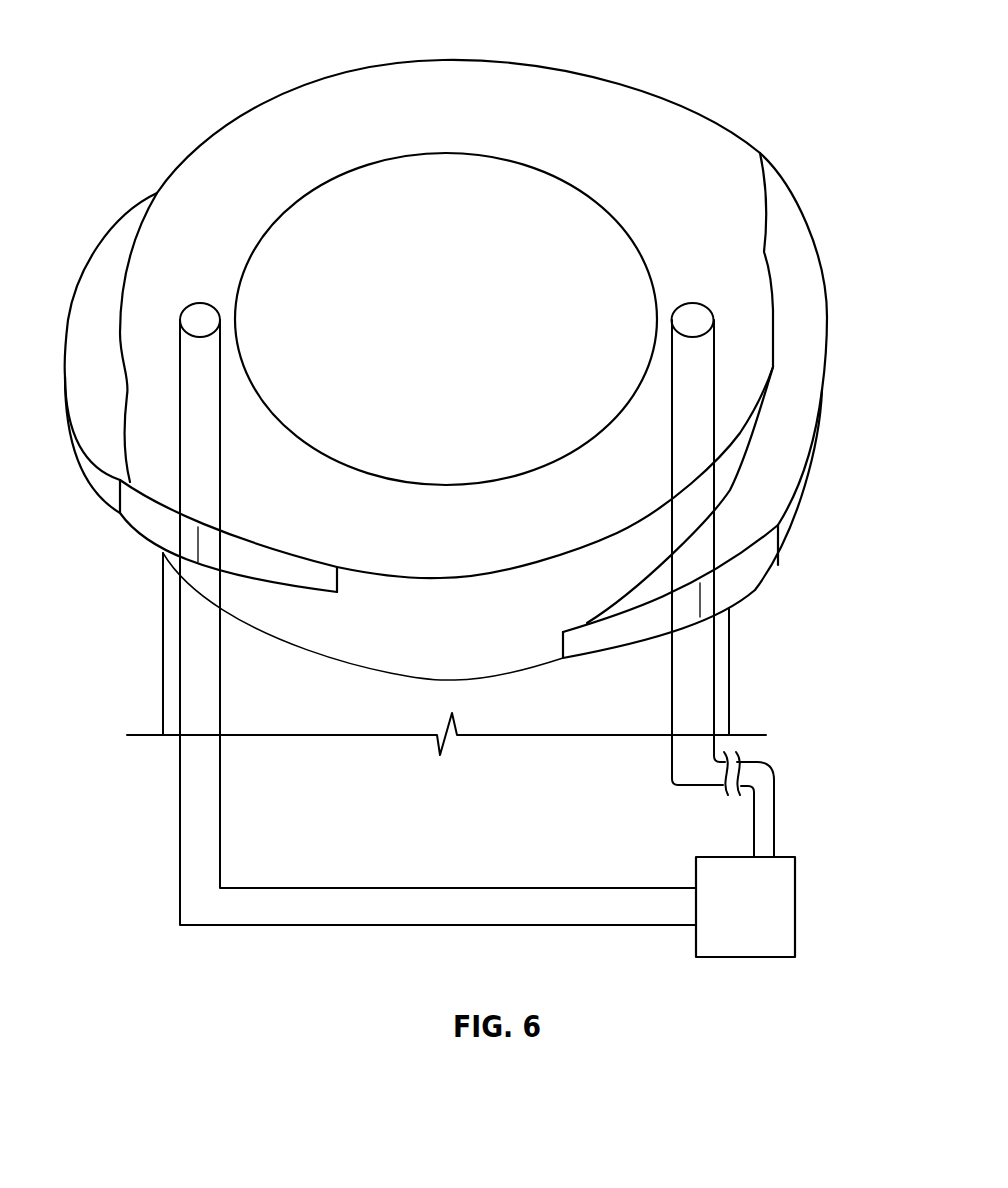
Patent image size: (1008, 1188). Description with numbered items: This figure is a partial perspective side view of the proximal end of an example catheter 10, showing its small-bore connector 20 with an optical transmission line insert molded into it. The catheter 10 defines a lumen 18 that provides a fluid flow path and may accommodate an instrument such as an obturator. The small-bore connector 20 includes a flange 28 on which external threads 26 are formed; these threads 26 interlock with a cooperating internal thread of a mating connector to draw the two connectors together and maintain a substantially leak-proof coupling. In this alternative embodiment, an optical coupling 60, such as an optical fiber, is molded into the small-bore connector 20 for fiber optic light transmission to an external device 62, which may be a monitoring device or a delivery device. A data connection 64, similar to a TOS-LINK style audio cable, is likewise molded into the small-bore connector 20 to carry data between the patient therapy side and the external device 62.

The catheter 10 is at (678, 63).
The lumen 18 is at (456, 336).
The small-bore connector 20 is at (799, 580).
The external threads 26 is at (74, 436).
The flange 28 is at (532, 87).
The optical coupling 60 is at (687, 382).
The external device 62 is at (761, 919).
The data connection 64 is at (200, 660).